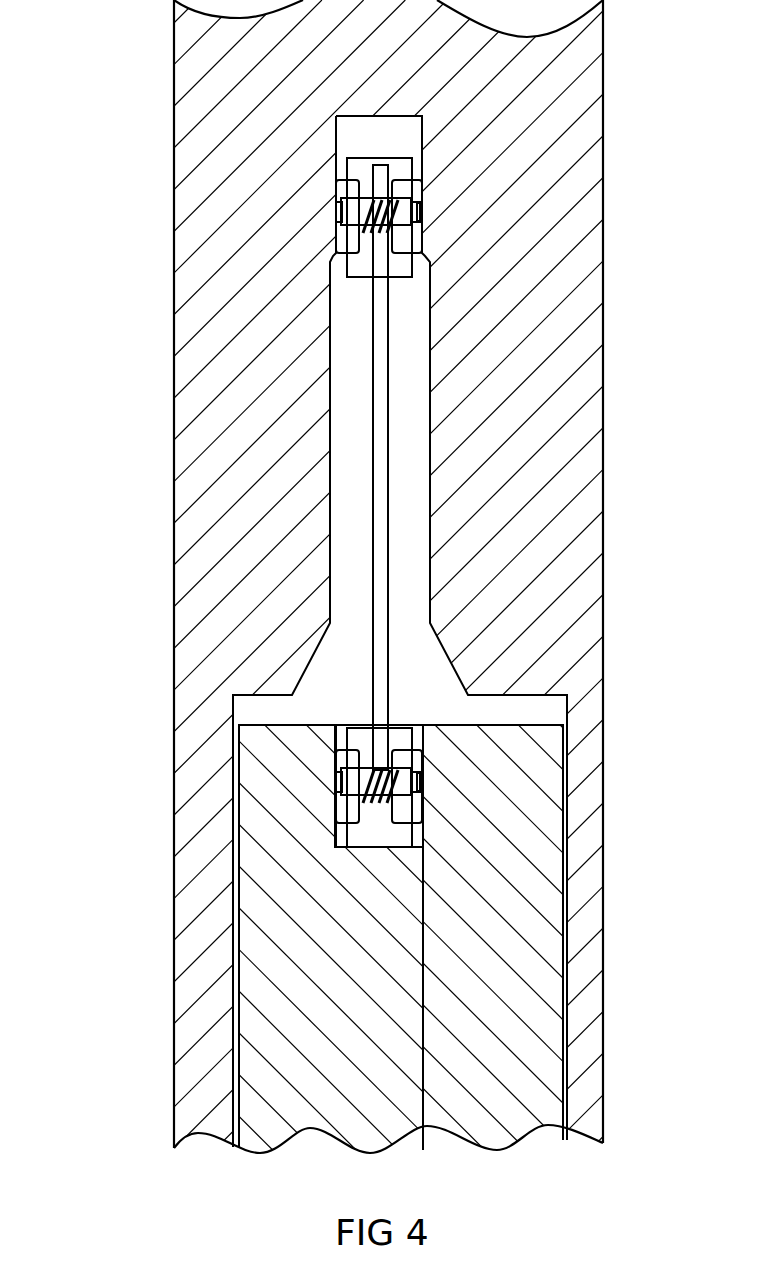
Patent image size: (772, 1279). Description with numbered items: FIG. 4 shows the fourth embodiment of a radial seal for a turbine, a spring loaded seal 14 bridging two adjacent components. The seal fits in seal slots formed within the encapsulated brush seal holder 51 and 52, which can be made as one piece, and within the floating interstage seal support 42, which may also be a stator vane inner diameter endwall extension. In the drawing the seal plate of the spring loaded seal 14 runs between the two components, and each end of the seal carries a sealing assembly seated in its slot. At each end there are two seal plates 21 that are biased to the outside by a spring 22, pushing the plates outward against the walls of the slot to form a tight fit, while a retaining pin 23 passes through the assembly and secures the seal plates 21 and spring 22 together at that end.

The spring loaded seal 14 is at (380, 513).
The seal plates 21 is at (340, 193).
The spring 22 is at (405, 226).
The retaining pin 23 is at (348, 216).
The floating interstage seal support 42 is at (522, 443).
The encapsulated brush seal holder 51 is at (318, 937).
The encapsulated brush seal holder 52 is at (495, 937).